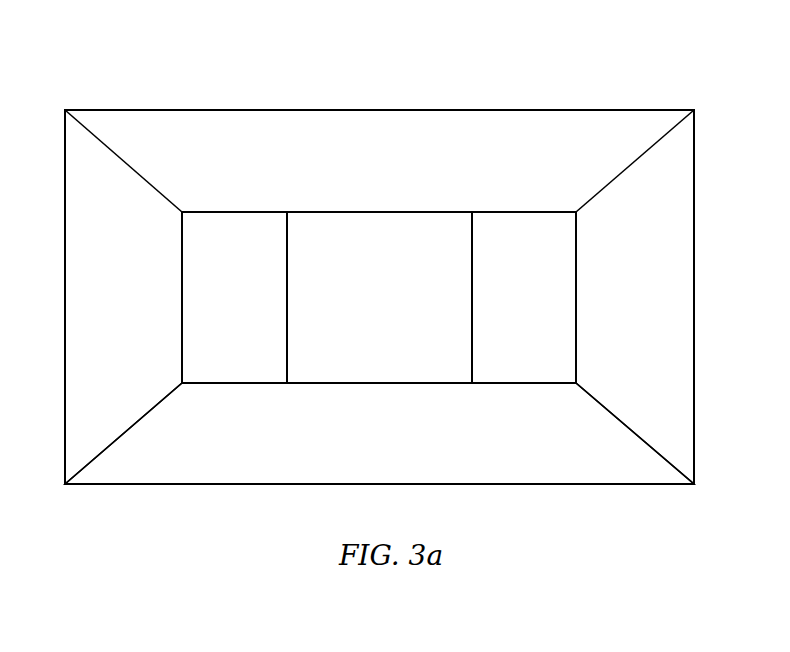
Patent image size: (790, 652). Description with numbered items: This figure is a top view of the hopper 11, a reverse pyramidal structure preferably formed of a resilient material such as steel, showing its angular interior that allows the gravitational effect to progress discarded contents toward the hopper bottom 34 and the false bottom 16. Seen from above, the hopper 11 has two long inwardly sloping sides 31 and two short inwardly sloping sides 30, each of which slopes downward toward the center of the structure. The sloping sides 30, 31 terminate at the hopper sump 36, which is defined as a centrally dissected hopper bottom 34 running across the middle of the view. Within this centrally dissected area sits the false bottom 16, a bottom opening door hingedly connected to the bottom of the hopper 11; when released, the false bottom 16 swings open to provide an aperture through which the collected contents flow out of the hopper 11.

The hopper 11 is at (360, 266).
The false bottom 16 is at (385, 340).
The short inwardly sloping sides 30 is at (123, 310).
The long inwardly sloping sides 31 is at (288, 430).
The hopper bottom 34 is at (236, 268).
The hopper sump 36 is at (352, 325).